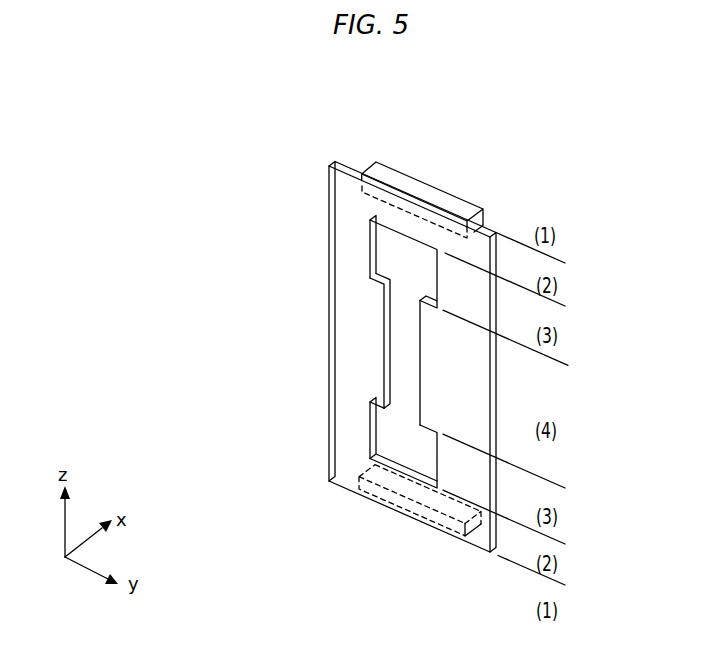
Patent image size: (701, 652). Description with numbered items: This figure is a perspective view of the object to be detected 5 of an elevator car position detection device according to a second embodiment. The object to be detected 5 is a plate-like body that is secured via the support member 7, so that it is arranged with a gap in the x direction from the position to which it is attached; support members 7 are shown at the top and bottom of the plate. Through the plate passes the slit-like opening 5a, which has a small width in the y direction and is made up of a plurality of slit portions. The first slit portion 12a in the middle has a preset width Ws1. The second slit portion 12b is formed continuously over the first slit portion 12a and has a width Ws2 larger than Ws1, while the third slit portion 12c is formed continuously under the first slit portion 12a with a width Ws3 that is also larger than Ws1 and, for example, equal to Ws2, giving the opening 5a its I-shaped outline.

The object to be detected 5 is at (348, 202).
The opening 5a is at (245, 208).
The support member 7 is at (451, 190).
The first slit portion 12a is at (400, 333).
The second slit portion 12b is at (397, 253).
The third slit portion 12c is at (393, 448).